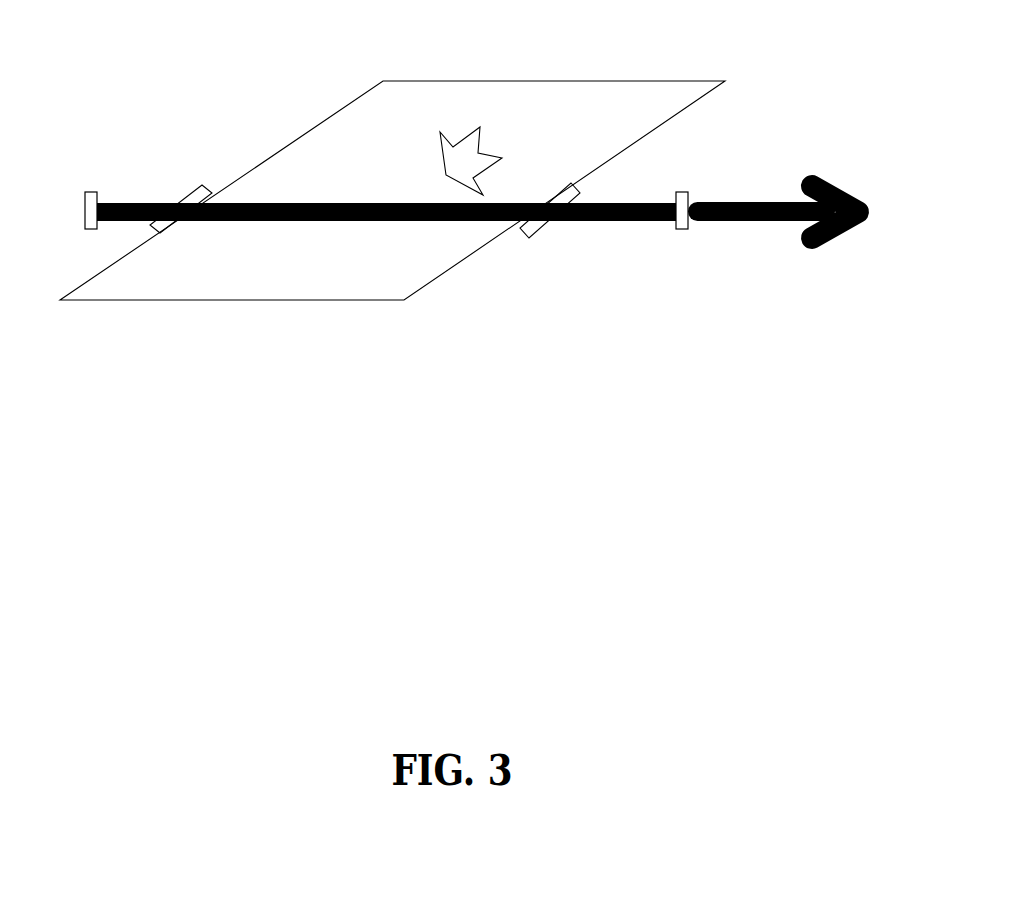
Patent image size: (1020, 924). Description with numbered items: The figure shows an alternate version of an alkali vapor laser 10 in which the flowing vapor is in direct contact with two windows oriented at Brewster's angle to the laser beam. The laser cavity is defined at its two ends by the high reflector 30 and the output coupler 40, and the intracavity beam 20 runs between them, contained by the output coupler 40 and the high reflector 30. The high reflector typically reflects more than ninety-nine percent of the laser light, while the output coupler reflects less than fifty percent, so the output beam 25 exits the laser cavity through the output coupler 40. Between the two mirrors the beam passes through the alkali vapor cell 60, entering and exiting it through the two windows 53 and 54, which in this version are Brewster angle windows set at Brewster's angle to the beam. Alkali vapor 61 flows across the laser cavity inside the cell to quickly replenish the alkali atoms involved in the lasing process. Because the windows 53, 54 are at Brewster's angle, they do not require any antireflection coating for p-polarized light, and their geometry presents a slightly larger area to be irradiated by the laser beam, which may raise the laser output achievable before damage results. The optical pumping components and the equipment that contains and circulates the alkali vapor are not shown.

The alkali vapor laser 10 is at (322, 423).
The intracavity beam 20 is at (318, 225).
The output beam 25 is at (762, 232).
The high reflector 30 is at (93, 178).
The output coupler 40 is at (688, 182).
The Brewster angle window 53 is at (200, 178).
The Brewster angle window 54 is at (533, 240).
The alkali vapor cell 60 is at (411, 307).
The alkali vapor 61 is at (495, 133).